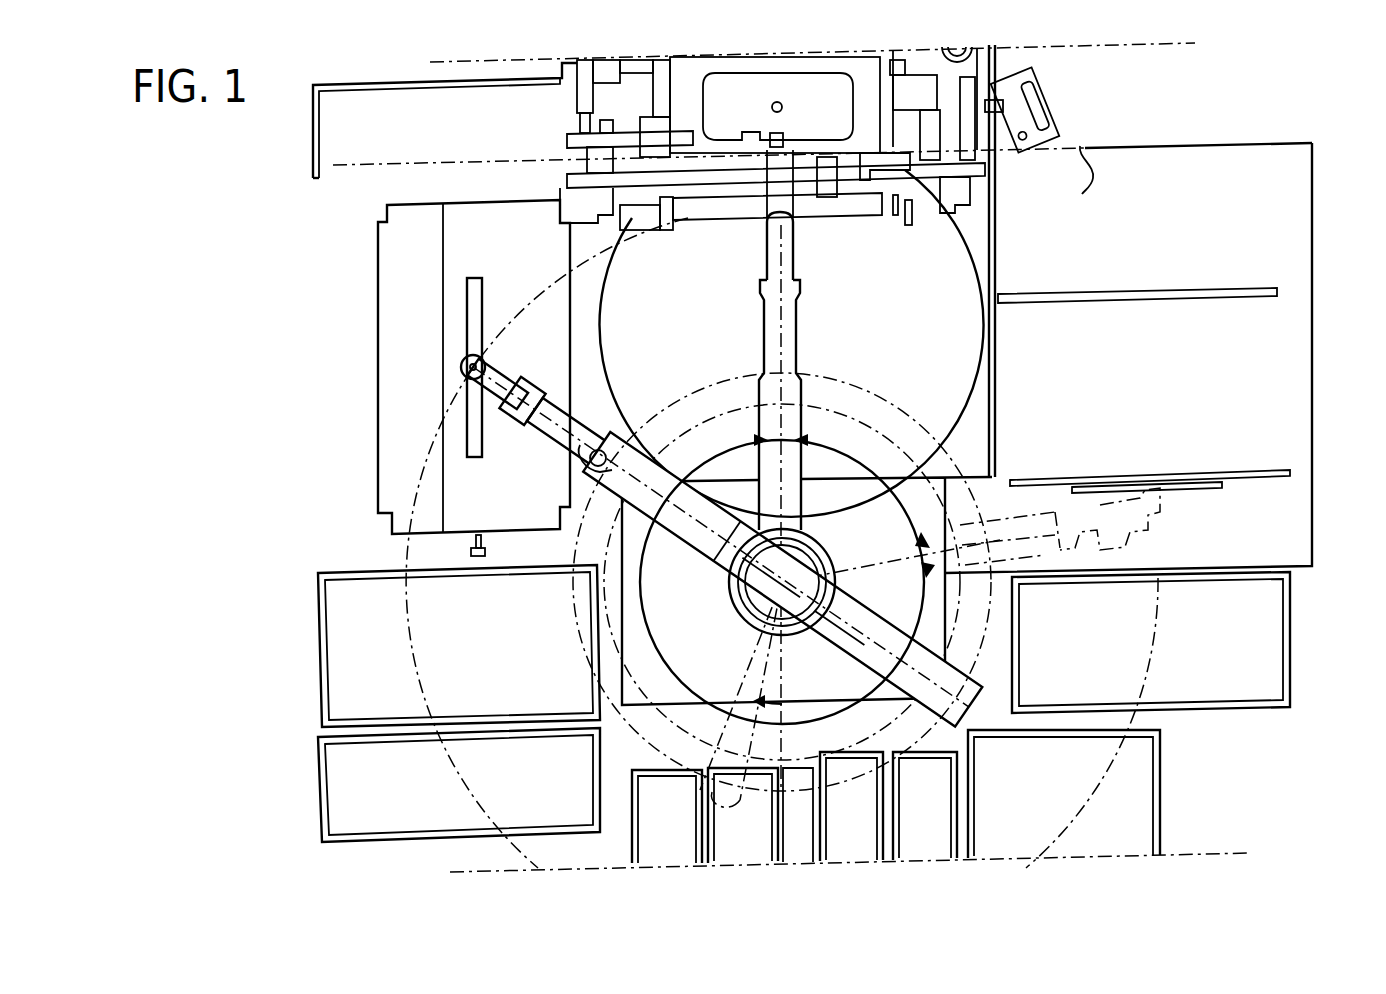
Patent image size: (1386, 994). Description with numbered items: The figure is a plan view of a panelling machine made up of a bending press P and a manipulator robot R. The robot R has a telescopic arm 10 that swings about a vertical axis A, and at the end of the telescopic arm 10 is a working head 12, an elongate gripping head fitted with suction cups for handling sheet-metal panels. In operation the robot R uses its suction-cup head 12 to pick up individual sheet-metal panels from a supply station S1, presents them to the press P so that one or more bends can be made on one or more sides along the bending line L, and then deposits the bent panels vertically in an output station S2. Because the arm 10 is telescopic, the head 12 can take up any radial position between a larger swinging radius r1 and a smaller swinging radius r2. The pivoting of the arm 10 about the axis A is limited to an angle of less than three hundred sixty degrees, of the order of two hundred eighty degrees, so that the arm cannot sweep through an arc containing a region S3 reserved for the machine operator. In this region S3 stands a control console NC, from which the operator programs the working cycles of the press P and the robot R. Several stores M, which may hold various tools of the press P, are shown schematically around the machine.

The bending press P is at (540, 120).
The control console NC is at (1040, 86).
The operator region S3 is at (1108, 243).
The bending line L is at (1082, 178).
The output station S2 is at (1205, 440).
The supply station S1 is at (360, 430).
The working head 12 is at (467, 306).
The telescopic arm 10 is at (659, 462).
The vertical axis A is at (746, 618).
The manipulator robot R is at (697, 578).
The larger swinging radius r1 is at (405, 553).
The smaller swinging radius r2 is at (573, 600).
The tool stores M is at (450, 850).